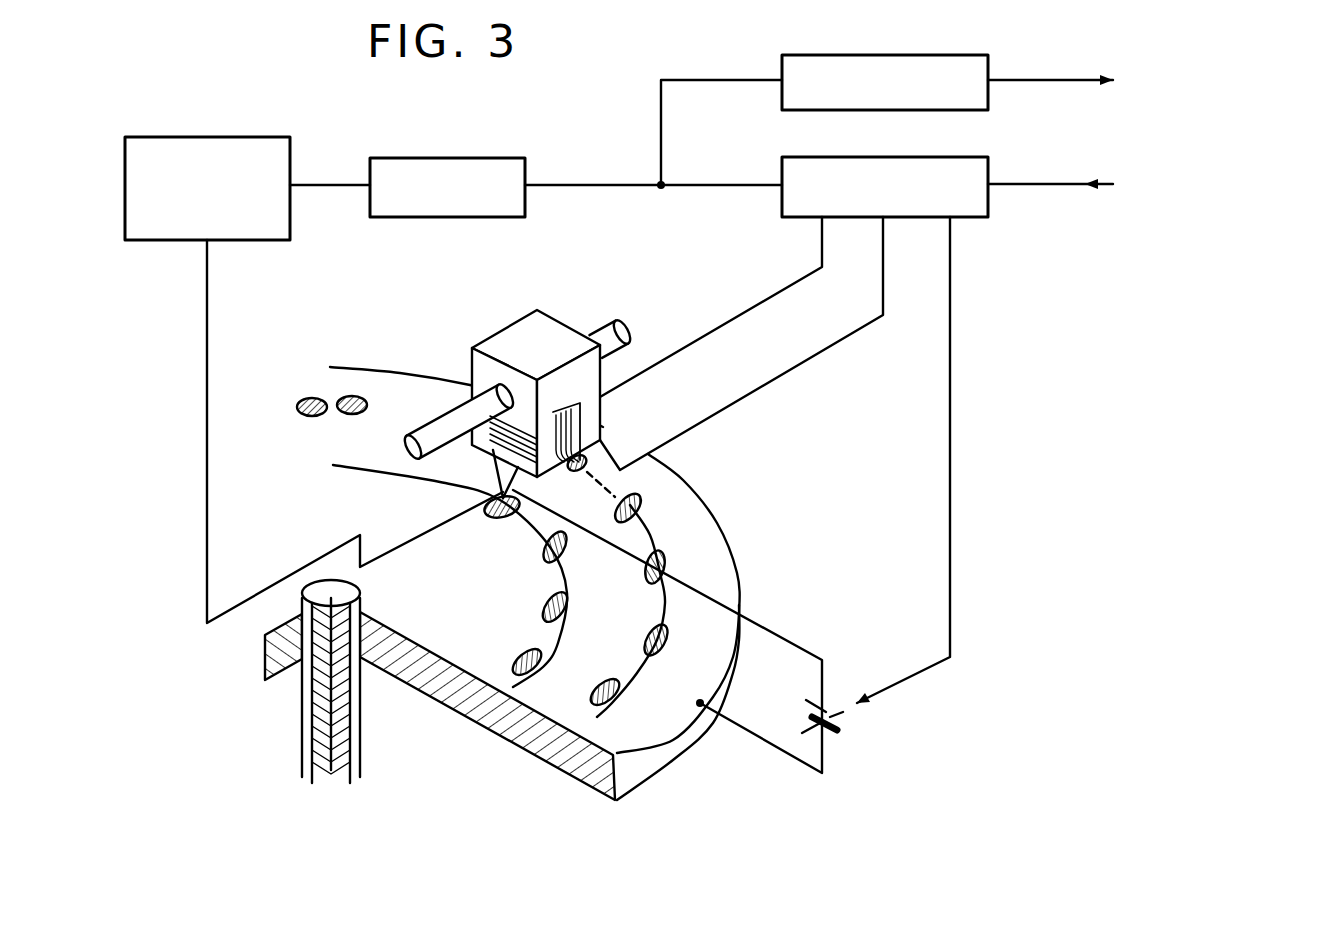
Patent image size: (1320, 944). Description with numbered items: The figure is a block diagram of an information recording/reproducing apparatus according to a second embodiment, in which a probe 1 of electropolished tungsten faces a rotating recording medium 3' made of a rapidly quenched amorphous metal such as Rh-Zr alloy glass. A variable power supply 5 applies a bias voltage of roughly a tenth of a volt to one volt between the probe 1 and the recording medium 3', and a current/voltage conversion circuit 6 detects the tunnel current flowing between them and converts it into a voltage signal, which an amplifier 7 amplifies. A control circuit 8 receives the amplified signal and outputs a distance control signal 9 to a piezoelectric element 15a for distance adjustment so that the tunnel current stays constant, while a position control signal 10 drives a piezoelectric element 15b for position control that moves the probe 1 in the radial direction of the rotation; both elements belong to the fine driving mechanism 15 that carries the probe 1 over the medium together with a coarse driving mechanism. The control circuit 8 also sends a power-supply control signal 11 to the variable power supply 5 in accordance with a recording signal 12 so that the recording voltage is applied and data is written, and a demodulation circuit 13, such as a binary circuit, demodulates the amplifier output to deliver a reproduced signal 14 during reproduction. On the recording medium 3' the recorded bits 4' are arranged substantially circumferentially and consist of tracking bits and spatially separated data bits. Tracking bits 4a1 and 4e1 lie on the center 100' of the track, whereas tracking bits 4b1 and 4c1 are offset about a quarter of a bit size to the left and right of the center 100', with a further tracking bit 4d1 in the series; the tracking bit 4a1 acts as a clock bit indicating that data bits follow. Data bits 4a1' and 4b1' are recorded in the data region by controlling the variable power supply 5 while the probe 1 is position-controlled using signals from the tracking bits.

The probe 1 is at (447, 486).
The recording medium 3' is at (440, 690).
The recorded bits 4' is at (499, 604).
The tracking bit 4a1 is at (499, 649).
The tracking bit 4b1 is at (548, 649).
The tracking bit 4c1 is at (542, 558).
The tracking bit 4d1 is at (502, 519).
The tracking bit 4e1 is at (620, 505).
The data bit 4a1' is at (350, 428).
The data bit 4b1' is at (292, 429).
The variable power supply 5 is at (830, 728).
The current/voltage conversion circuit 6 is at (207, 171).
The amplifier 7 is at (447, 170).
The control circuit 8 is at (885, 170).
The distance control signal 9 is at (740, 313).
The position control signal 10 is at (762, 385).
The power-supply control signal 11 is at (950, 235).
The recording signal 12 is at (1124, 189).
The demodulation circuit 13 is at (884, 64).
The reproduced signal 14 is at (1131, 85).
The fine driving mechanism 15 is at (510, 330).
The piezoelectric element for distance adjustment 15a is at (560, 412).
The piezoelectric element for position control 15b is at (587, 460).
The center of the track 100' is at (535, 583).